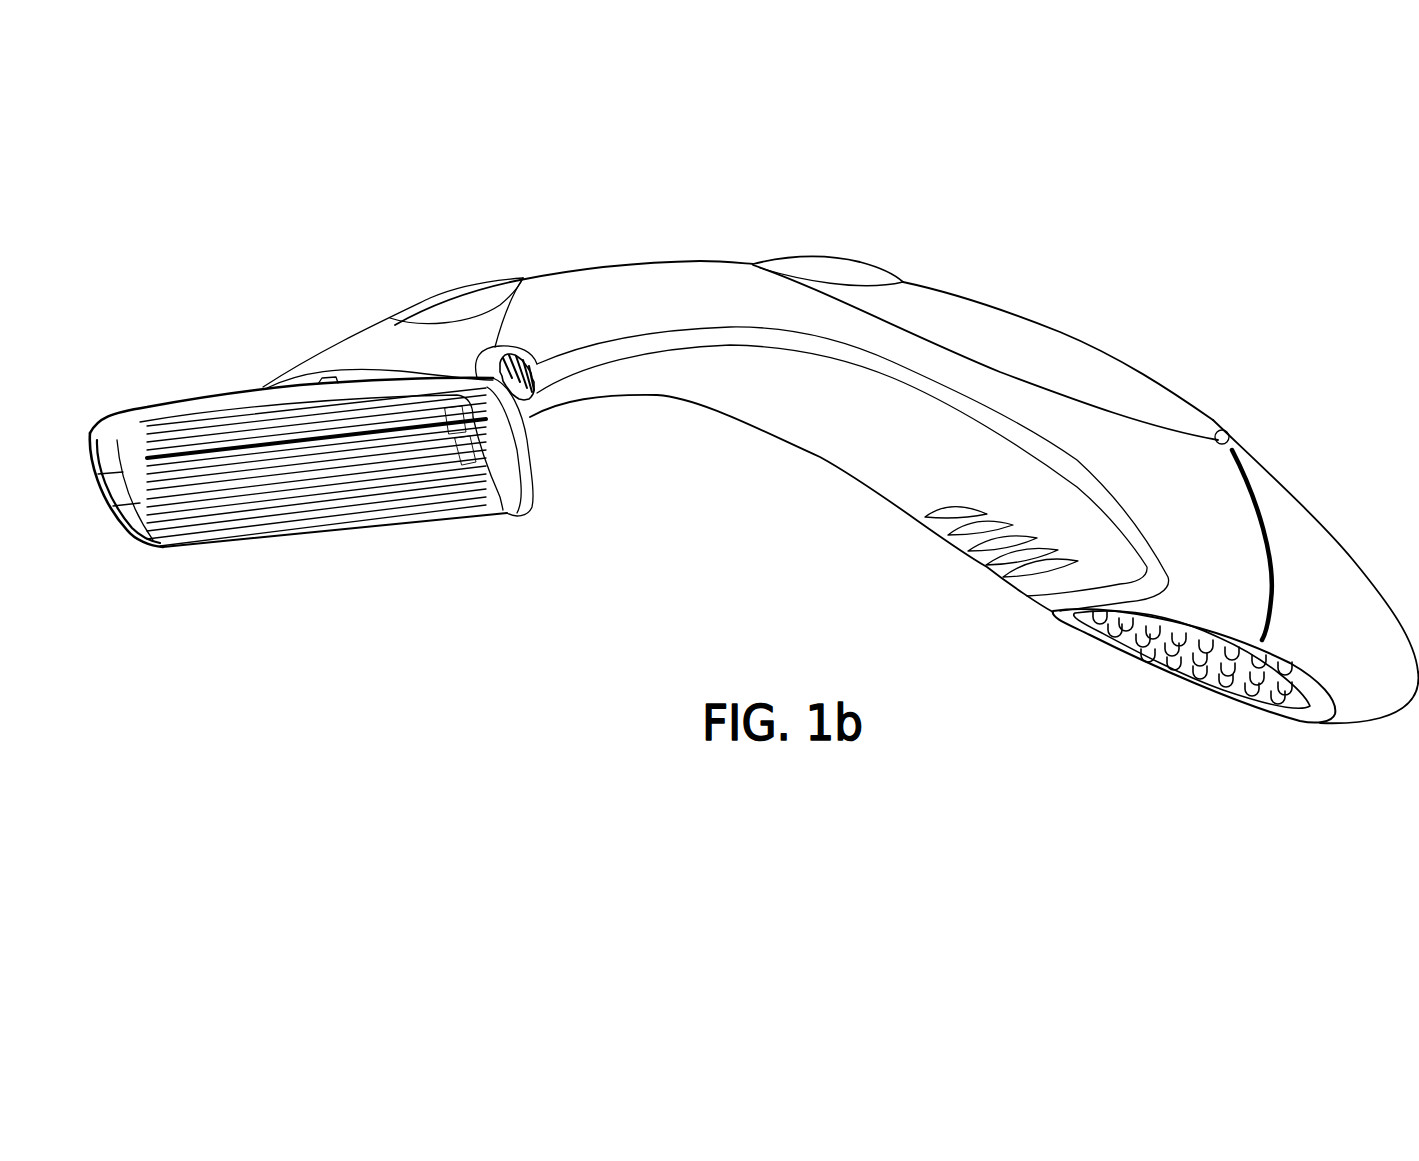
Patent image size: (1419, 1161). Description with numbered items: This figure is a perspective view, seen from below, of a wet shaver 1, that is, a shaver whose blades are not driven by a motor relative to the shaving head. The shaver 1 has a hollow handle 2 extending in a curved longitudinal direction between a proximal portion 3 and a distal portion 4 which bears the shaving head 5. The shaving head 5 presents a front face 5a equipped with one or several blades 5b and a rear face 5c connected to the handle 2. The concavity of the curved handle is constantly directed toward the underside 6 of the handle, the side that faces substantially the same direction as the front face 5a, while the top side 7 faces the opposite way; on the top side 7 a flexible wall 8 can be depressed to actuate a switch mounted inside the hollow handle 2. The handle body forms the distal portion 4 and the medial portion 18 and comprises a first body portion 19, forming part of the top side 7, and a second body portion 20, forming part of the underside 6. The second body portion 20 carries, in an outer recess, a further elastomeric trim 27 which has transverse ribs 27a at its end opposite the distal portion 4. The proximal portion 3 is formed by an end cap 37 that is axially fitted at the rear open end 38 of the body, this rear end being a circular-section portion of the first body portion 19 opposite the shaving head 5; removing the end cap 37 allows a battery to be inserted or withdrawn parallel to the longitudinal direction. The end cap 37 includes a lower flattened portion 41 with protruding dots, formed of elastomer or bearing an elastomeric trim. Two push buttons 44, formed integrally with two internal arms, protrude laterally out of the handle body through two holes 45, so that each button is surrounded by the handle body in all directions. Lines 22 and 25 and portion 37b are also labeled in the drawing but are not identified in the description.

The wet shaver 1 is at (240, 321).
The hollow handle 2 is at (1057, 664).
The proximal portion 3 is at (1363, 746).
The distal portion 4 is at (350, 355).
The shaving head 5 is at (543, 526).
The front face 5a is at (131, 557).
The blades 5b is at (300, 483).
The rear face 5c is at (193, 381).
The underside 6 is at (881, 467).
The top side 7 is at (1013, 291).
The flexible wall 8 is at (850, 262).
The medial portion 18 is at (799, 499).
The first body portion 19 is at (695, 272).
The second body portion 20 is at (730, 338).
The shell seam 22 is at (1080, 355).
The lens-shaped recess 25 is at (458, 293).
The elastomeric trim 27 is at (758, 400).
The transverse ribs 27a is at (1000, 578).
The end cap 37 is at (1313, 533).
The grip pad 37b is at (1273, 700).
The rear open end 38 is at (1257, 497).
The lower flattened portion 41 is at (1149, 676).
The push buttons 44 is at (527, 393).
The holes 45 is at (523, 278).